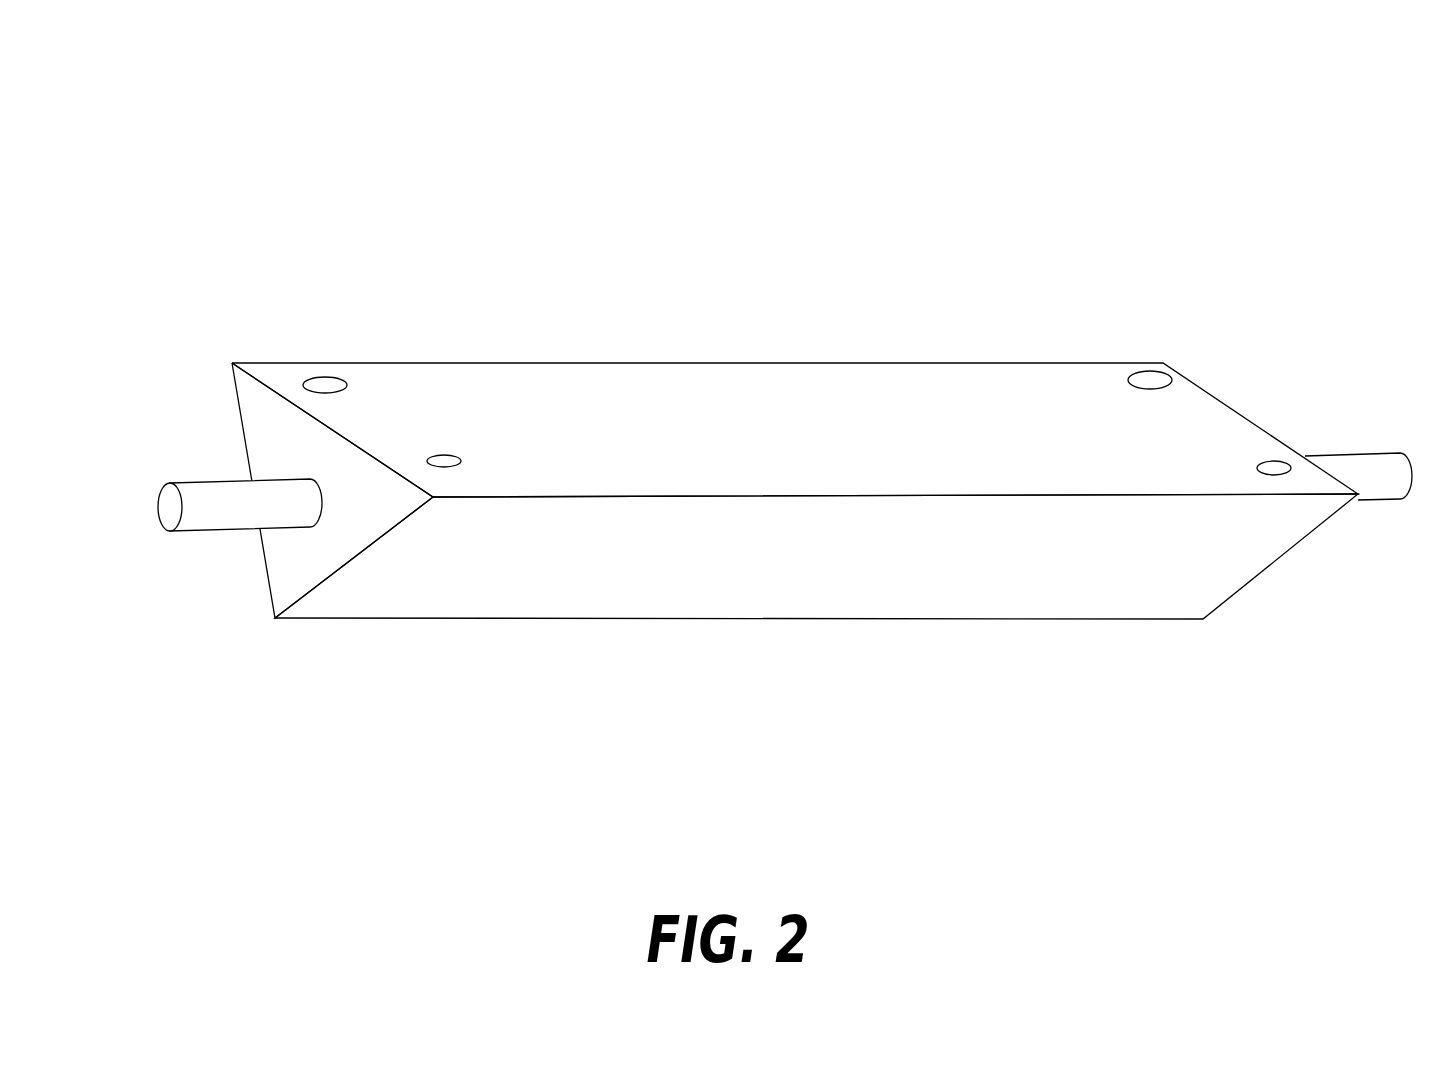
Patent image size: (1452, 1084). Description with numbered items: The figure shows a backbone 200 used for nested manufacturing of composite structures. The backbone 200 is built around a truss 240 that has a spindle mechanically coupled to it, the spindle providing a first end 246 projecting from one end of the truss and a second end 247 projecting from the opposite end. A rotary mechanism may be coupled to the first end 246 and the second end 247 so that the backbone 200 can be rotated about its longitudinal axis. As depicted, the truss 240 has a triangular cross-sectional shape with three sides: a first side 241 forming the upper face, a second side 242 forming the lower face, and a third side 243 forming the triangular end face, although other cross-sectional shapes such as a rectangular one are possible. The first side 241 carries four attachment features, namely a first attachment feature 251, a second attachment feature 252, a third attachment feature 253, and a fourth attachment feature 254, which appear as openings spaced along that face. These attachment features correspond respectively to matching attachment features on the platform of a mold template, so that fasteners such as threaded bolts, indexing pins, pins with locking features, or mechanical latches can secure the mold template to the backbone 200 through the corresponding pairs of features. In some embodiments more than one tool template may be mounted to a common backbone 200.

The backbone 200 is at (789, 418).
The truss 240 is at (761, 540).
The first side 241 is at (783, 397).
The second side 242 is at (839, 560).
The third side 243 is at (275, 657).
The first end 246 is at (155, 510).
The second end 247 is at (1412, 470).
The first attachment feature 251 is at (327, 380).
The second attachment feature 252 is at (1152, 373).
The third attachment feature 253 is at (1280, 463).
The fourth attachment feature 254 is at (444, 467).